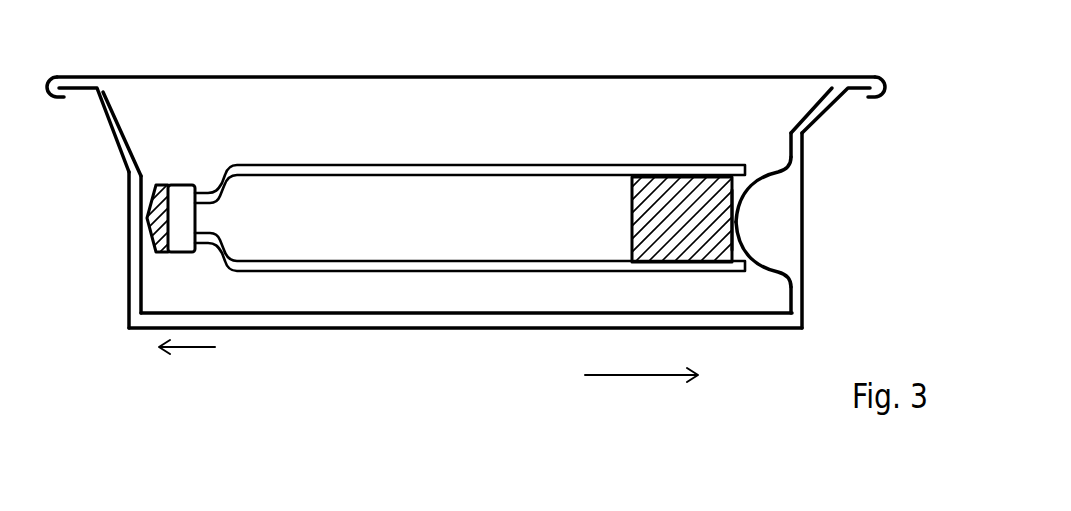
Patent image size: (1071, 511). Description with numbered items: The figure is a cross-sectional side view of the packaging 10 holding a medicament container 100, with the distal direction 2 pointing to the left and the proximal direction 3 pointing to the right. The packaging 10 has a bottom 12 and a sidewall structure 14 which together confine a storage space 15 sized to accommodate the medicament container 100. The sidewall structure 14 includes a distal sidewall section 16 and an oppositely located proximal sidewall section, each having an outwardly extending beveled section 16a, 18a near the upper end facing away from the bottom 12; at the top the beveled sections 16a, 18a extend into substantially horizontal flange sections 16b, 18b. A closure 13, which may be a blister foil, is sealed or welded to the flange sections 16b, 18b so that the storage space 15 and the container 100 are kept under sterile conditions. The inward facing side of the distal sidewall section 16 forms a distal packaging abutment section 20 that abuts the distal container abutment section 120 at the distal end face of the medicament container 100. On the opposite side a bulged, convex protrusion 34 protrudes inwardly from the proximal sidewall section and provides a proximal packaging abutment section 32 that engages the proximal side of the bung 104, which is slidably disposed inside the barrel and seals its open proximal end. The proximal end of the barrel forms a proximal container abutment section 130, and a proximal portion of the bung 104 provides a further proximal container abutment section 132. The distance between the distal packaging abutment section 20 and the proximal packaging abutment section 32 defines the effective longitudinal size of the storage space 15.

The packaging 10 is at (387, 64).
The bottom 12 is at (433, 320).
The closure 13 is at (330, 76).
The sidewall structure 14 is at (482, 261).
The storage space 15 is at (458, 99).
The distal sidewall section 16 is at (135, 212).
The beveled section 16a is at (112, 107).
The flange section 16b is at (67, 76).
The beveled section 18a is at (809, 117).
The flange section 18b is at (848, 76).
The distal packaging abutment section 20 is at (147, 272).
The proximal packaging abutment section 32 is at (730, 222).
The protrusion 34 is at (820, 230).
The medicament container 100 is at (346, 161).
The bung 104 is at (672, 181).
The distal container abutment section 120 is at (152, 243).
The proximal container abutment section 130 is at (768, 268).
The proximal container abutment section 132 is at (741, 190).
The distal direction 2 is at (187, 363).
The proximal direction 3 is at (641, 383).